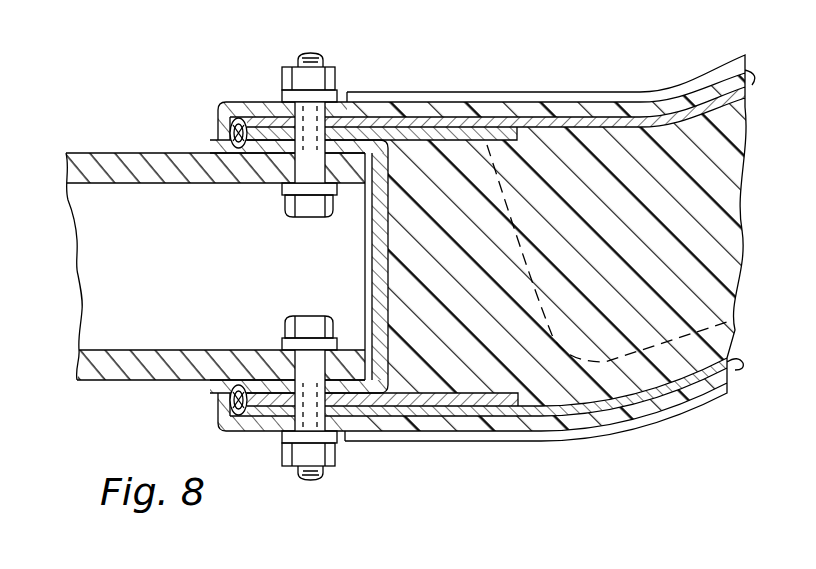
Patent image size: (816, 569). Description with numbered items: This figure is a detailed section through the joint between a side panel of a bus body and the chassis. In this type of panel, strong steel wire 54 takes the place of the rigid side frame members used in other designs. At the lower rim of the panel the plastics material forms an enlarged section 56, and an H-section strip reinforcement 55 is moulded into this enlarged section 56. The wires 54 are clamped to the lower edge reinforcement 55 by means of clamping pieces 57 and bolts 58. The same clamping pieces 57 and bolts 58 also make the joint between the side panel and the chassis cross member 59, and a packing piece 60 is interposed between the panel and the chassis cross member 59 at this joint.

The steel wire 54 is at (612, 120).
The H-section strip reinforcement 55 is at (383, 152).
The enlarged section of plastics 56 is at (458, 226).
The clamping piece 57 is at (246, 104).
The bolt 58 is at (308, 175).
The chassis cross member 59 is at (152, 160).
The packing piece 60 is at (254, 150).